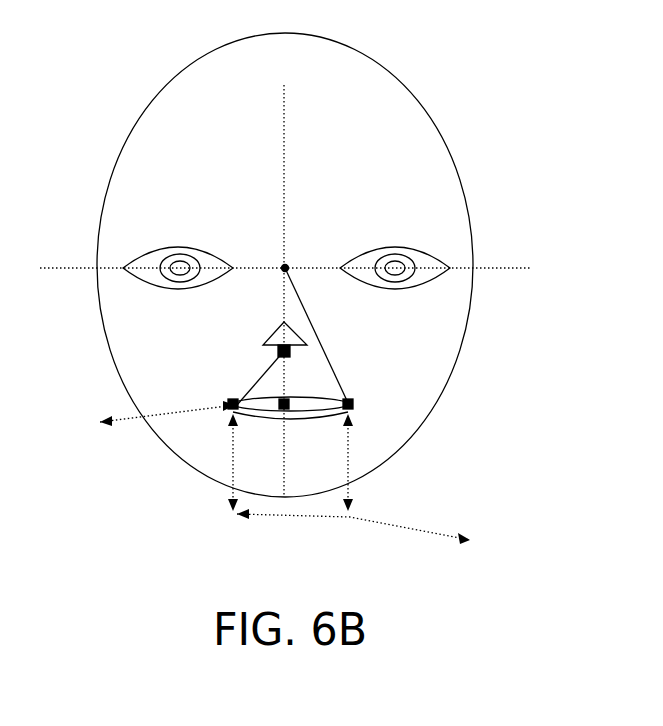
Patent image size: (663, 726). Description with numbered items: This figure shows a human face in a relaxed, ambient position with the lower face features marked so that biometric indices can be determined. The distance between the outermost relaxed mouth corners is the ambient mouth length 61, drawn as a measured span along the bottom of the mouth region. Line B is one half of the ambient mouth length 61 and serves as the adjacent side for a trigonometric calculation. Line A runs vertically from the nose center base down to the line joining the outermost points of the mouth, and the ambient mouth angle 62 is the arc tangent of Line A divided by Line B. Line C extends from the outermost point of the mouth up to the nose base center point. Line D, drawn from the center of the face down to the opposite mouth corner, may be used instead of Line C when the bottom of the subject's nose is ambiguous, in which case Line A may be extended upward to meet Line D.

The ambient mouth length 61 is at (407, 529).
The ambient mouth angle 62 is at (123, 421).
The Line A is at (286, 372).
The Line B is at (310, 418).
The Line C is at (262, 370).
The Line D is at (322, 352).